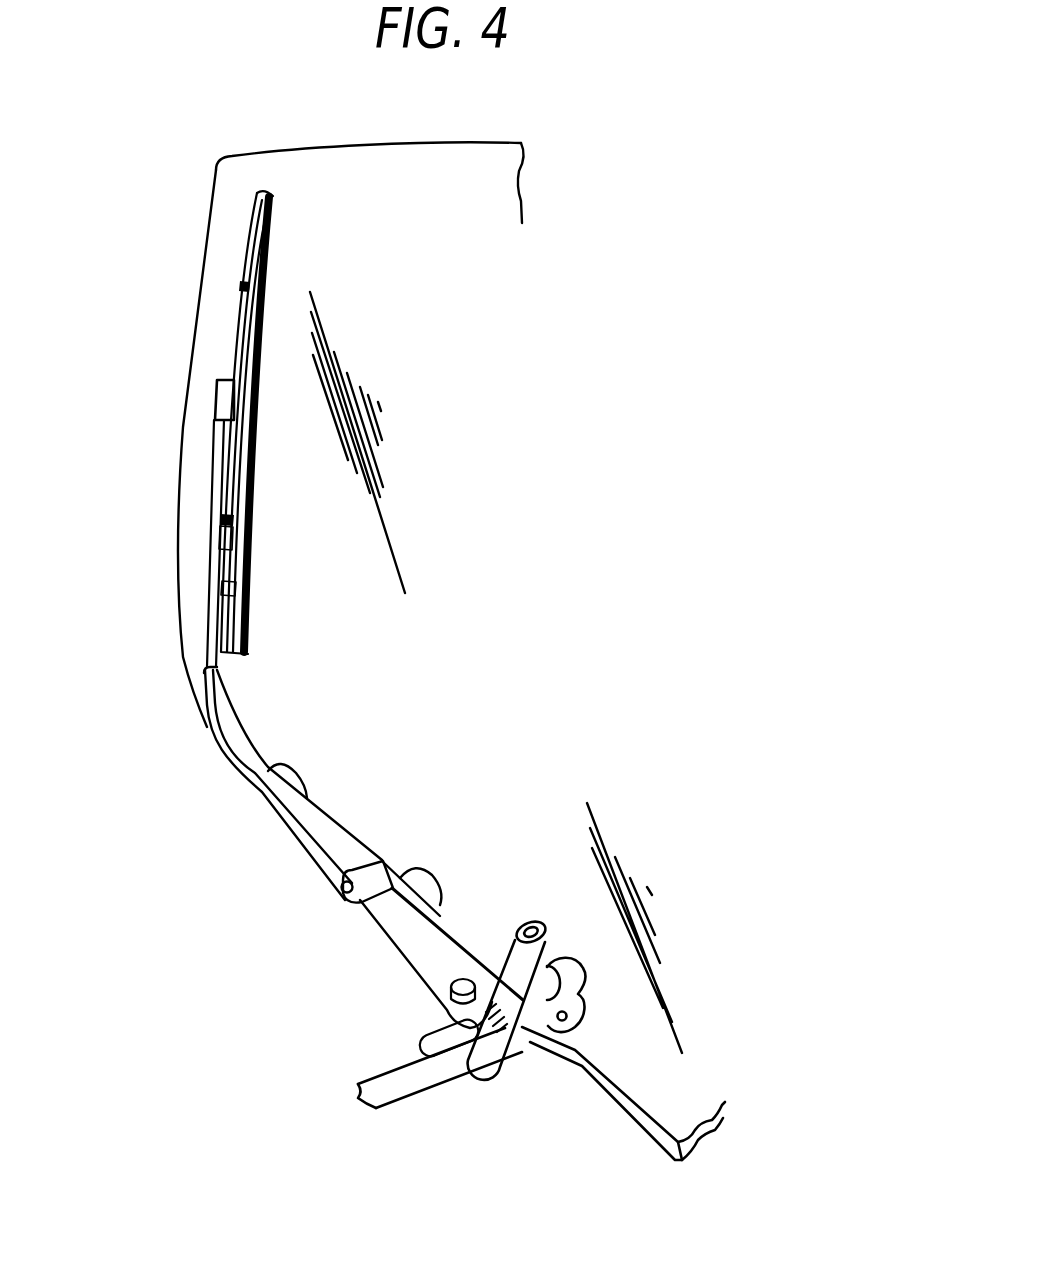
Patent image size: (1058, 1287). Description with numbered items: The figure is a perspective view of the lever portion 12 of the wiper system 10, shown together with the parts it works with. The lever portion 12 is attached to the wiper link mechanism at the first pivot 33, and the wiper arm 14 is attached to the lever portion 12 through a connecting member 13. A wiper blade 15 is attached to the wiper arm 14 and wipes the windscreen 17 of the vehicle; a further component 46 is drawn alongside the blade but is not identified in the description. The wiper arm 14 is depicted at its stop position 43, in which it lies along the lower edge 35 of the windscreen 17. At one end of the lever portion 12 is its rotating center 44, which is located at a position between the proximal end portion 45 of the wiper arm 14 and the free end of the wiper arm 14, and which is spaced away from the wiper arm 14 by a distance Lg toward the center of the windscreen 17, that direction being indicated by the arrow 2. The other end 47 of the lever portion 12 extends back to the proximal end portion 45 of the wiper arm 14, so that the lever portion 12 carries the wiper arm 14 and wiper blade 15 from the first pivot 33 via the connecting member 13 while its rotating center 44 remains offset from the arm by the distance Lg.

The wiper system 10 is at (250, 861).
The lever portion 12 is at (519, 1048).
The connecting member 13 is at (484, 1075).
The wiper arm 14 is at (383, 941).
The wiper blade 15 is at (245, 288).
The windscreen 17 is at (198, 571).
The first pivot 33 is at (587, 996).
The lower edge 35 is at (262, 777).
The stop position 43 is at (355, 910).
The rotating center 44 is at (529, 922).
The proximal end portion 45 is at (448, 1010).
The blade holder 46 is at (213, 443).
The other end of the lever portion 47 is at (455, 1046).
The distance Lg is at (504, 916).
The arrow 2 is at (710, 933).